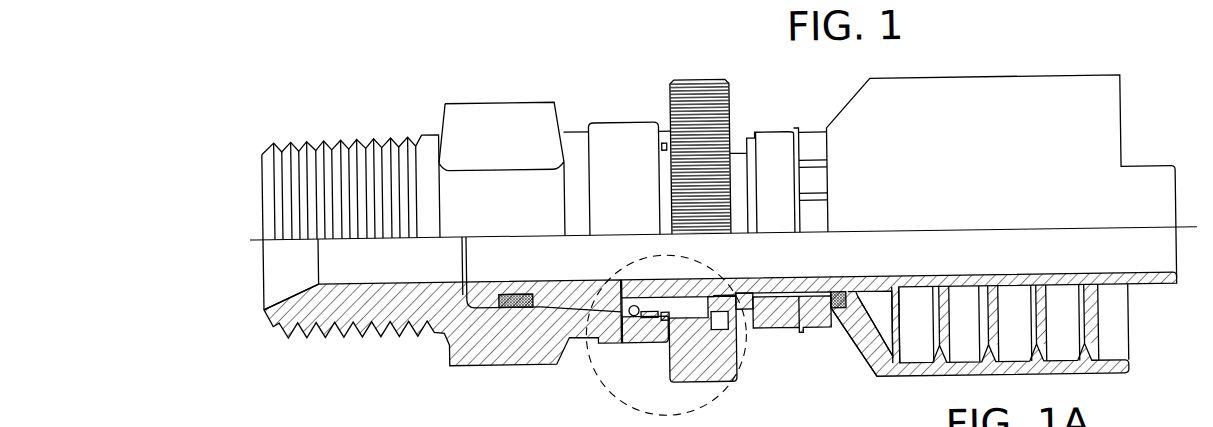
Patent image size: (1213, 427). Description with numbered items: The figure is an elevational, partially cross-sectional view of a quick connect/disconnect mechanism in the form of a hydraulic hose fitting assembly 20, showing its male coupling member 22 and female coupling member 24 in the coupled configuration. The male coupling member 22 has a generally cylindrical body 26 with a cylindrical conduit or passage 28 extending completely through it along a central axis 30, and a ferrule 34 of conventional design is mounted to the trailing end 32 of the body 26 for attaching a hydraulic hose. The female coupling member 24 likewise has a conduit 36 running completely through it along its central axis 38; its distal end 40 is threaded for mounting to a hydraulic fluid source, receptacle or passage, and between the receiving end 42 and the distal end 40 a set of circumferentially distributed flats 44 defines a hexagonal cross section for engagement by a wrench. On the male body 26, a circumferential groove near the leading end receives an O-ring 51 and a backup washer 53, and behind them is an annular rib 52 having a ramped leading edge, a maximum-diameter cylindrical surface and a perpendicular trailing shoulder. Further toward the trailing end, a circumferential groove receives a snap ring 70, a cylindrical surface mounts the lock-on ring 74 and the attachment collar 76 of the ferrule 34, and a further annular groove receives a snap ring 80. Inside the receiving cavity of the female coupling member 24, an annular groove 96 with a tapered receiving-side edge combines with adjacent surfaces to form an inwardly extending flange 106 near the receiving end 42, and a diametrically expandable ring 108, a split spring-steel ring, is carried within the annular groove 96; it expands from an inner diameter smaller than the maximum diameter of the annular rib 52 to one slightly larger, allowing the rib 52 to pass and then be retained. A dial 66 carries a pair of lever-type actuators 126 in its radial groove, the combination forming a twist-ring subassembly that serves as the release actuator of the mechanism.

The hydraulic hose fitting assembly 20 is at (597, 76).
The male coupling member 22 is at (606, 282).
The female coupling member 24 is at (497, 348).
The generally cylindrical body 26 is at (791, 273).
The cylindrical conduit or passage 28 is at (834, 274).
The central axis 30 is at (1158, 240).
The trailing end 32 is at (1144, 334).
The ferrule 34 is at (862, 384).
The conduit 36 is at (392, 283).
The central axis 38 is at (258, 240).
The distal end 40 is at (285, 128).
The receiving end 42 is at (635, 106).
The flats 44 is at (500, 121).
The O-ring 51 is at (510, 297).
The annular rib 52 is at (578, 306).
The backup washer 53 is at (529, 297).
The dial 66 is at (707, 101).
The snap ring 70 is at (742, 320).
The lock-on ring 74 is at (770, 155).
The attachment collar 76 is at (812, 334).
The snap ring 80 is at (846, 310).
The annular groove 96 is at (626, 347).
The inwardly extending flange 106 is at (647, 347).
The diametrically expandable ring 108 is at (680, 274).
The lever-type actuators 126 is at (732, 279).